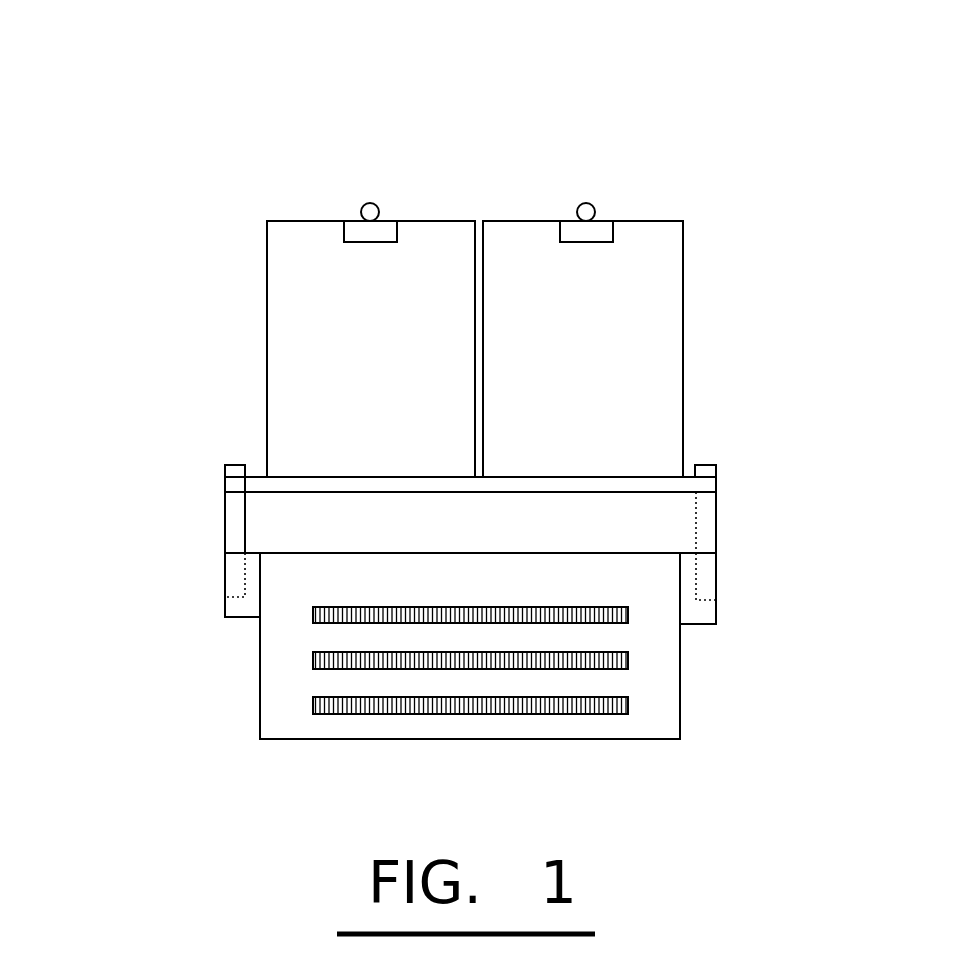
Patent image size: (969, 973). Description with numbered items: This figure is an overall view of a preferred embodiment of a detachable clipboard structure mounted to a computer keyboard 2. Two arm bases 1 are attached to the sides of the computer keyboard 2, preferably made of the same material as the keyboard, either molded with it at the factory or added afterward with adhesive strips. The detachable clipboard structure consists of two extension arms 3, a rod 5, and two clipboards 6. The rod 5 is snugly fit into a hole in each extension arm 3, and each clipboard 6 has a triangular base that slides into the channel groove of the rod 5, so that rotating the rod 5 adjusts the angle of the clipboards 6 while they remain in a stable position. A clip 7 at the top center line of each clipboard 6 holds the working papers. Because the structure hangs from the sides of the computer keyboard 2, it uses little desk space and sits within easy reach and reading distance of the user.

The arm base 1 is at (243, 620).
The computer keyboard 2 is at (658, 677).
The extension arm 3 is at (233, 529).
The rod 5 is at (713, 485).
The clipboard 6 is at (300, 260).
The clip 7 is at (371, 203).